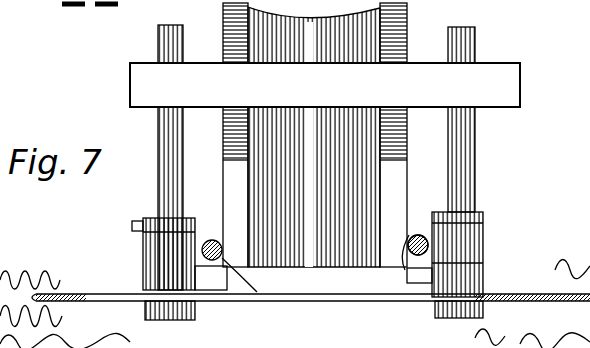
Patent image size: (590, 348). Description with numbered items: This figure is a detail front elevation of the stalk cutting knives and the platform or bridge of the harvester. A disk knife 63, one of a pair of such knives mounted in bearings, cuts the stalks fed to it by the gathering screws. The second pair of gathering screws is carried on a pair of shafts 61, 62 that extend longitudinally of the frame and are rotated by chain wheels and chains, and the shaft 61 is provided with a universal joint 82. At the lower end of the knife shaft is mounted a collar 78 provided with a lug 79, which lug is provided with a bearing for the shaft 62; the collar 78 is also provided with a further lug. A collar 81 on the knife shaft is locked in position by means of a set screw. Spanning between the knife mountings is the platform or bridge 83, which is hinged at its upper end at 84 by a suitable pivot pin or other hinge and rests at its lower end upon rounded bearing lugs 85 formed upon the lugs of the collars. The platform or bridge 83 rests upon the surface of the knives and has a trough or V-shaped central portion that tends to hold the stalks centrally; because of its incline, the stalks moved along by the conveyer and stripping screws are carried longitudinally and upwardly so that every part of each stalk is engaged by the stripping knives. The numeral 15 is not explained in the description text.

The core block 15 is at (301, 135).
The shaft 61 is at (210, 239).
The shaft 62 is at (419, 232).
The disk knife 63 is at (311, 281).
The collar 78 is at (145, 250).
The lug 79 is at (422, 302).
The collar 81 is at (150, 218).
The universal joint 82 is at (418, 245).
The platform or bridge 83 is at (398, 166).
The hinge 84 is at (511, 294).
The rounded bearing lug 85 is at (210, 302).